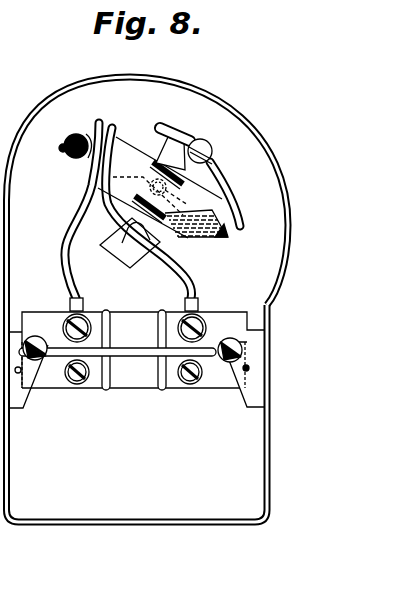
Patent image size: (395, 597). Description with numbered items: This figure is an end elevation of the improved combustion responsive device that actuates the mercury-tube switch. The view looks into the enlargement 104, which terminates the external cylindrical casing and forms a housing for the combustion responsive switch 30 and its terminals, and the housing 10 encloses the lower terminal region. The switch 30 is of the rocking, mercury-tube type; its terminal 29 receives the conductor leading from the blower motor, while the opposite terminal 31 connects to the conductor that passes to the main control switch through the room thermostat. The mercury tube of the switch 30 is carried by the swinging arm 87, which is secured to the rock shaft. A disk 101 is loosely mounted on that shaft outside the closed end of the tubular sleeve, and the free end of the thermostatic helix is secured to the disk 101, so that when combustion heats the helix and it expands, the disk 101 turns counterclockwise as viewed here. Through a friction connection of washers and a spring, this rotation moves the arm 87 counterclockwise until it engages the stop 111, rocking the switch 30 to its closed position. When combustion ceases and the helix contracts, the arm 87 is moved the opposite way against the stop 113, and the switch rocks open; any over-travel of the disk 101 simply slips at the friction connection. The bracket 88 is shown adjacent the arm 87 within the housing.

The housing 10 is at (270, 452).
The terminal 29 is at (200, 312).
The combustion responsive switch 30 is at (205, 203).
The opposite terminal 31 is at (67, 307).
The swinging arm 87 is at (162, 242).
The bracket 88 is at (133, 256).
The disk 101 is at (133, 282).
The enlargement 104 is at (275, 293).
The stop 111 is at (63, 150).
The stop 113 is at (199, 140).